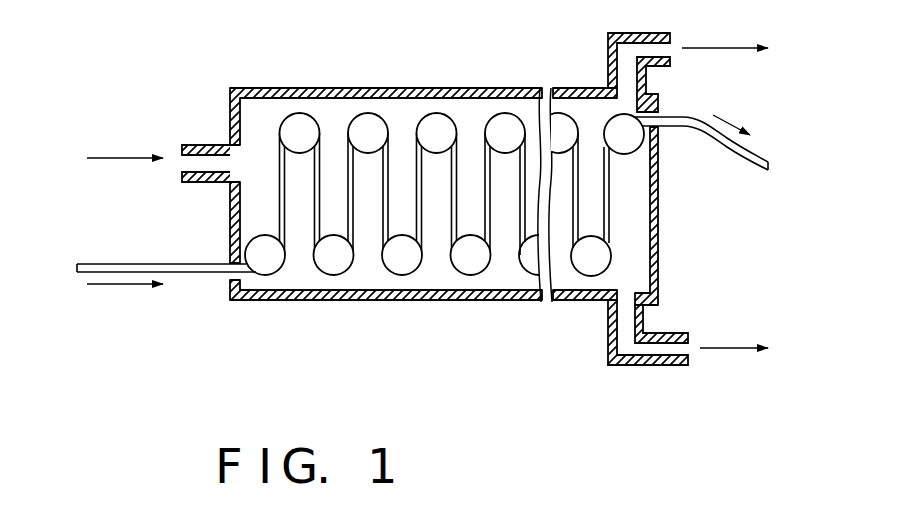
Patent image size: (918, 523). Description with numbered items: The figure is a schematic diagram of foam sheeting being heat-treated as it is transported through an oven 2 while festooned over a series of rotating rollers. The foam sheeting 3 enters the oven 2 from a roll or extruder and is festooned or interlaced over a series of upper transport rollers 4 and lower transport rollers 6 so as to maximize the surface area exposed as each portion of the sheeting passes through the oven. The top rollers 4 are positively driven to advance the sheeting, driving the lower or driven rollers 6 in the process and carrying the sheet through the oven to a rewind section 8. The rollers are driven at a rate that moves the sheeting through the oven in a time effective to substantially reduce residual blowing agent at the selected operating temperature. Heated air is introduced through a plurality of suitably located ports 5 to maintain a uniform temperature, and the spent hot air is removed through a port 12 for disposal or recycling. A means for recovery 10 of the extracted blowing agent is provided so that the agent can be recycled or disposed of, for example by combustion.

The oven 2 is at (230, 115).
The foam sheeting 3 is at (312, 230).
The upper transport rollers 4 is at (313, 113).
The ports 5 is at (155, 212).
The lower transport rollers 6 is at (337, 268).
The rewind section 8 is at (720, 149).
The means for recovery 10 is at (710, 72).
The port 12 is at (709, 333).